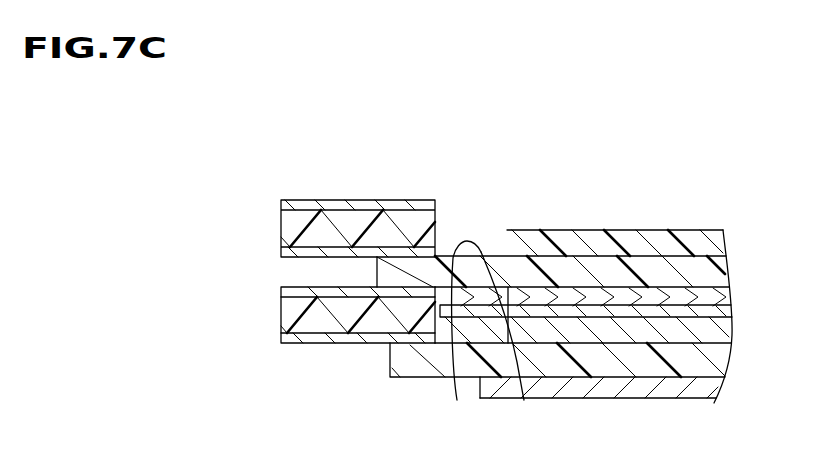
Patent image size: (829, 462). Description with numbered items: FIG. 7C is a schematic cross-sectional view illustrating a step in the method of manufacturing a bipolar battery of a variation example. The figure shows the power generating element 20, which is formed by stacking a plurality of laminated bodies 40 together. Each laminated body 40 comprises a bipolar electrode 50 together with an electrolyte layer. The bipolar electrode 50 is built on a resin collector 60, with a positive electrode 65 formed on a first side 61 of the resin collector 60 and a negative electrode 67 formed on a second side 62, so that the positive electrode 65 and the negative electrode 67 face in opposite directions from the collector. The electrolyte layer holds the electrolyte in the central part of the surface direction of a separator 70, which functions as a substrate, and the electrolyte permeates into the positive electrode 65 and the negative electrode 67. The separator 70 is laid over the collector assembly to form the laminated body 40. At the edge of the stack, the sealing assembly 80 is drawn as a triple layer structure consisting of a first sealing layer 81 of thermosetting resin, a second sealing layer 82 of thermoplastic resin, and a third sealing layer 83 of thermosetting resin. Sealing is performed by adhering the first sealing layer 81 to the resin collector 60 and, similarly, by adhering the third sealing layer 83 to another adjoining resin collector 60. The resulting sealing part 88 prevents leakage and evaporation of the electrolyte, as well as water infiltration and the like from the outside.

The power generating element 20 is at (748, 225).
The laminated body 40 is at (797, 175).
The bipolar electrode 50 is at (587, 175).
The resin collector 60 is at (523, 273).
The first side 61 is at (457, 400).
The second side 62 is at (524, 400).
The positive electrode 65 is at (508, 252).
The negative electrode 67 is at (557, 297).
The separator 70 is at (630, 305).
The sealing assembly 80 is at (230, 270).
The first sealing layer 81 is at (290, 342).
The second sealing layer 82 is at (292, 315).
The third sealing layer 83 is at (290, 290).
The sealing part 88 is at (381, 354).